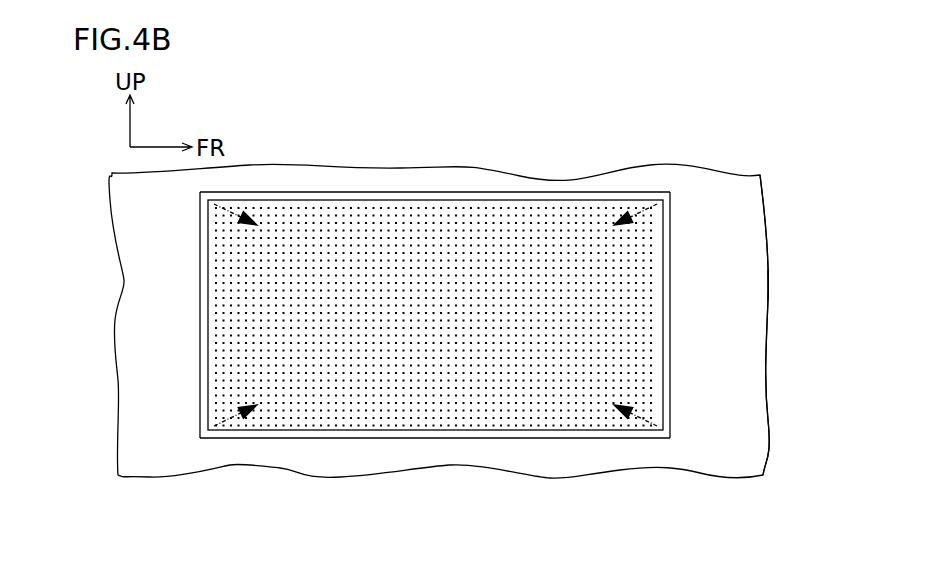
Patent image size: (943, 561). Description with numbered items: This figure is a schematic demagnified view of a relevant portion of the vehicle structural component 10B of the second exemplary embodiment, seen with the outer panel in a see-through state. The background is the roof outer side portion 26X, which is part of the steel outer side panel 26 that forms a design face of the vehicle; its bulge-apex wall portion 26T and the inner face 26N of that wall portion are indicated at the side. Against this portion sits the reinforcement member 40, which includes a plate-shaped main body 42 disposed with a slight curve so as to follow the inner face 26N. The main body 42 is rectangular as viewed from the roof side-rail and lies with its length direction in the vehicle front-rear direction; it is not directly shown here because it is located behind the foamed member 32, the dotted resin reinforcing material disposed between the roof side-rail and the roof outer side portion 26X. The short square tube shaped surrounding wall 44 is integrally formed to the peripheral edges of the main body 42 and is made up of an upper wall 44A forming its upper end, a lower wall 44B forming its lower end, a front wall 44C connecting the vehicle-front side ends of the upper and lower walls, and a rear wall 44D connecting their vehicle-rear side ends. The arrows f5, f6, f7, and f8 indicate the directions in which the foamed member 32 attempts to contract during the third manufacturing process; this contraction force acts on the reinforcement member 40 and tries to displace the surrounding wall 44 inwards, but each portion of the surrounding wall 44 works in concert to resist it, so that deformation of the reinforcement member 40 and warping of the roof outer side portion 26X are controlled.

The vehicle structural component 10B is at (132, 177).
The roof outer side portion 26X is at (756, 230).
The outer side panel 26 is at (439, 321).
The bulge-apex wall portion 26T is at (765, 267).
The inner face 26N is at (755, 286).
The reinforcement member 40 is at (597, 181).
The surrounding wall 44 is at (469, 181).
The upper wall 44A is at (535, 192).
The lower wall 44B is at (540, 438).
The front wall 44C is at (670, 362).
The rear wall 44D is at (200, 362).
The main body 42 is at (633, 291).
The foamed member 32 is at (630, 323).
The arrow f5 is at (663, 205).
The arrow f6 is at (208, 206).
The arrow f7 is at (208, 424).
The arrow f8 is at (663, 425).